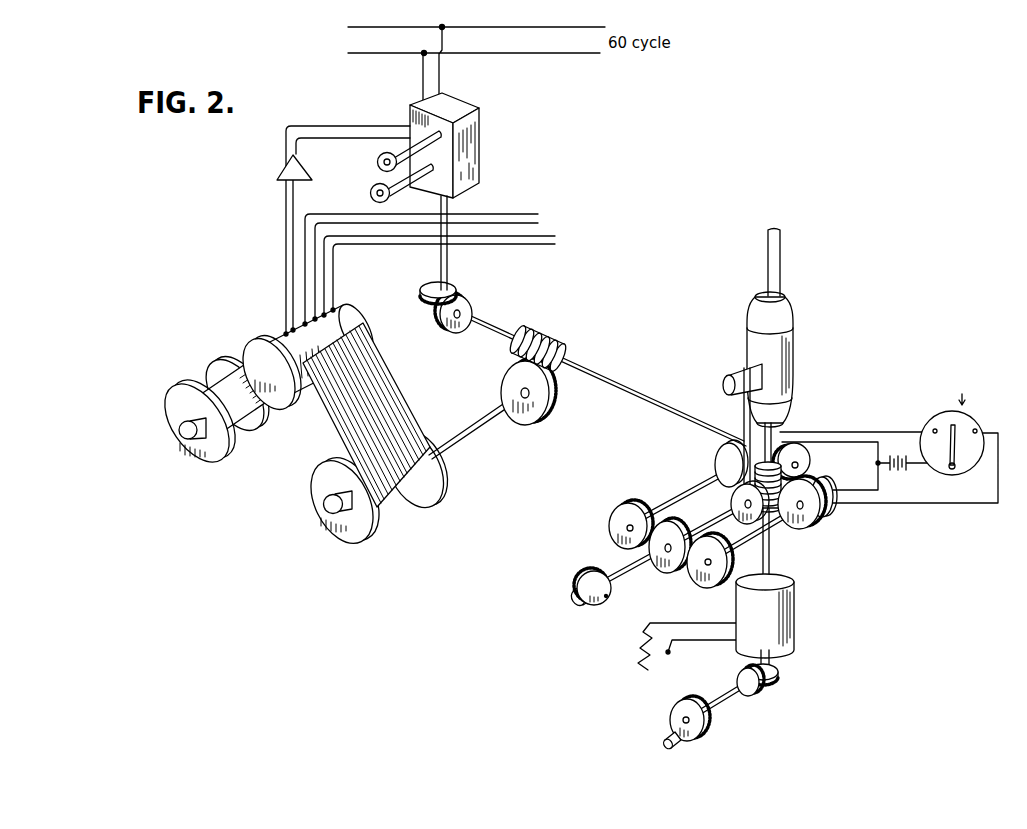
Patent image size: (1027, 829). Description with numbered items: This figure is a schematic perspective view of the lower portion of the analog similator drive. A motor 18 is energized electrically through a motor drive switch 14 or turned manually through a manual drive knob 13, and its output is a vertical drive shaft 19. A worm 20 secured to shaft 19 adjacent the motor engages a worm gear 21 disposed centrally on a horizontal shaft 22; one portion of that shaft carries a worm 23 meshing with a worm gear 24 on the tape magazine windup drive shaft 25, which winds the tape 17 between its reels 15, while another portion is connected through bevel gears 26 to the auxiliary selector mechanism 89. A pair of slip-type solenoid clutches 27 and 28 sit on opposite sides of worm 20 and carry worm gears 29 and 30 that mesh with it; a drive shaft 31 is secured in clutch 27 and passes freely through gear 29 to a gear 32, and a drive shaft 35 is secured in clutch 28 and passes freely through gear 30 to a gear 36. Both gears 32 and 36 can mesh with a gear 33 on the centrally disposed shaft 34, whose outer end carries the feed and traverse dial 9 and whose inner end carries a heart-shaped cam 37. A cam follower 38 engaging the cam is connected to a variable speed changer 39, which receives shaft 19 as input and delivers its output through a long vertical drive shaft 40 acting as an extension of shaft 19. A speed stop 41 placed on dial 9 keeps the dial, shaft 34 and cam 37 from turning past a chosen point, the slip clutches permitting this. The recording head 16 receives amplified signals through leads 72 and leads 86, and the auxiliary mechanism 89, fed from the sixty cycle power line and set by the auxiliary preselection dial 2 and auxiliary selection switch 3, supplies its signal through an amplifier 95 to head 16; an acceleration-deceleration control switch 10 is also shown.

The auxiliary preselection dial 2 is at (395, 151).
The auxiliary selection switch 3 is at (391, 184).
The feed and traverse dial 9 is at (572, 608).
The acceleration-deceleration control switch 10 is at (953, 423).
The manual drive knob 13 is at (708, 700).
The motor drive switch 14 is at (669, 646).
The reel 15 is at (296, 458).
The recording head 16 is at (306, 358).
The tape 17 is at (369, 415).
The motor 18 is at (787, 616).
The vertical drive shaft 19 is at (796, 545).
The worm 20 is at (800, 480).
The worm gear 21 is at (810, 443).
The horizontal shaft 22 is at (602, 378).
The worm 23 is at (544, 339).
The worm gear 24 is at (550, 393).
The tape magazine windup drive shaft 25 is at (477, 432).
The bevel gears 26 is at (467, 264).
The solenoid clutch 27 is at (794, 430).
The solenoid clutch 28 is at (854, 503).
The worm gear 29 is at (716, 462).
The worm gear 30 is at (824, 508).
The drive shaft 31 is at (687, 493).
The gear 32 is at (619, 521).
The gear 33 is at (669, 562).
The central shaft 34 is at (666, 544).
The drive shaft 35 is at (761, 535).
The gear 36 is at (710, 576).
The heart-shaped cam 37 is at (731, 502).
The cam follower 38 is at (726, 428).
The variable speed changer 39 is at (777, 359).
The long vertical drive shaft 40 is at (795, 260).
The speed stop 41 is at (608, 595).
The leads 72 is at (461, 273).
The leads 86 is at (437, 257).
The auxiliary selector mechanism 89 is at (465, 145).
The amplifier 95 is at (325, 231).